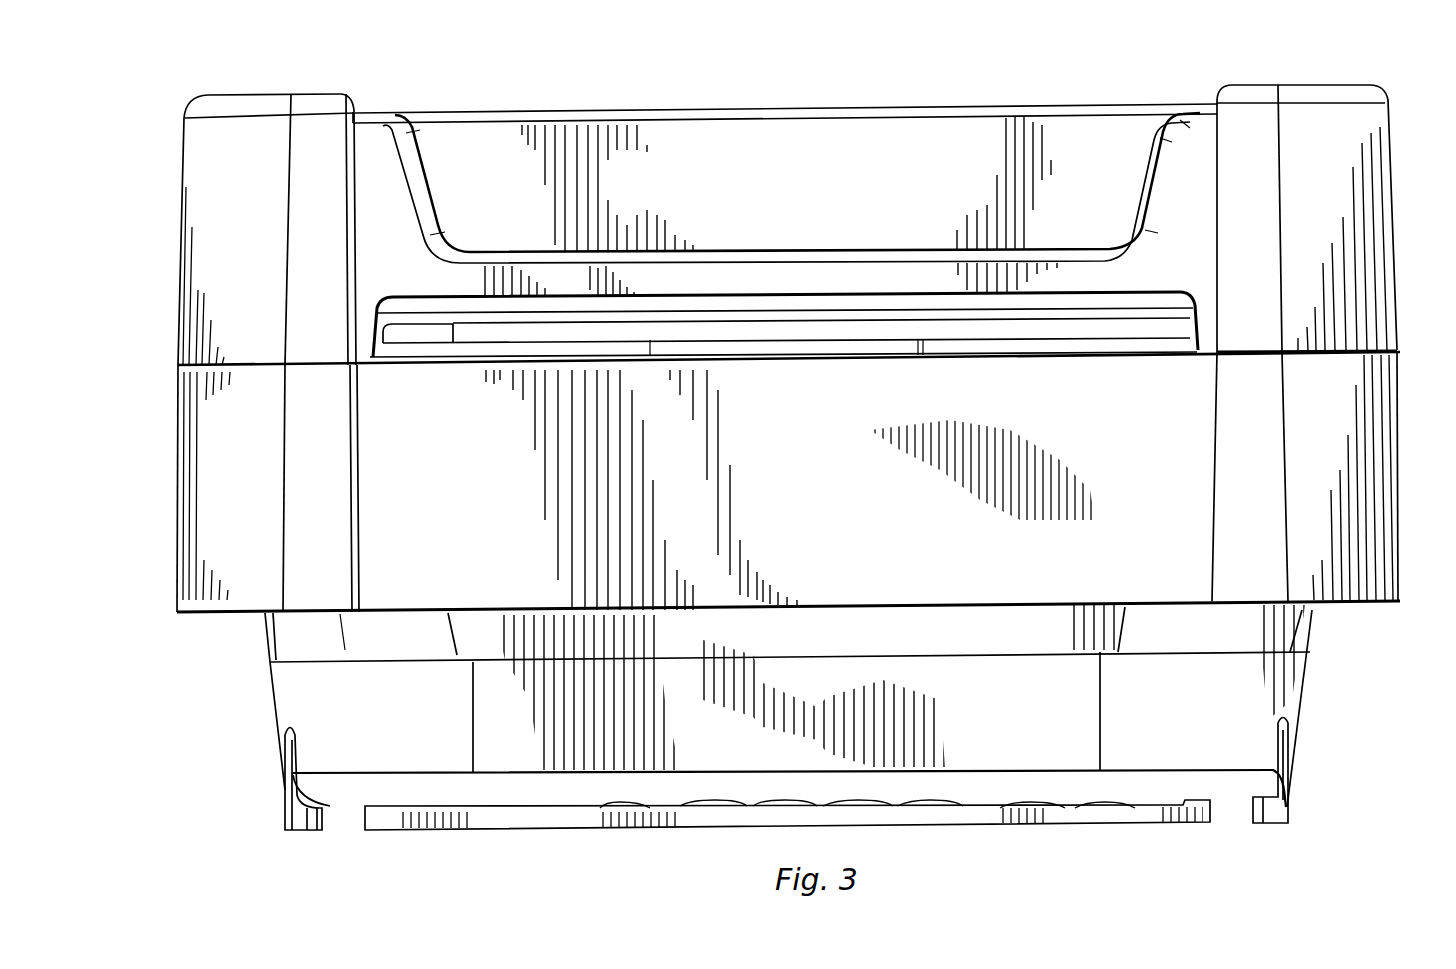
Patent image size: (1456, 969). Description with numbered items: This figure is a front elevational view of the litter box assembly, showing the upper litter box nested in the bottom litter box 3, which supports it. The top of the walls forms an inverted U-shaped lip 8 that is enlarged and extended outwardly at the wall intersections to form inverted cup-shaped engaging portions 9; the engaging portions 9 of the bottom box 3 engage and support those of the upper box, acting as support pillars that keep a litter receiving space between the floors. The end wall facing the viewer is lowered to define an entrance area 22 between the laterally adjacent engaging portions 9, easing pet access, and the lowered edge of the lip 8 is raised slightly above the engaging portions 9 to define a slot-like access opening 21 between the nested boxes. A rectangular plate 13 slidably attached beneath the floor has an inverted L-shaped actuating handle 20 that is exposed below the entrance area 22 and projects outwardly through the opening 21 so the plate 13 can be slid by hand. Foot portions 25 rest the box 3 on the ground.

The second litter box 3 is at (976, 719).
The inverted U-shaped lip 8 is at (390, 284).
The inverted cup-shaped engaging portions 9 is at (207, 187).
The rectangular plate 13 is at (1095, 810).
The actuating handle 20 is at (768, 326).
The slot-like access opening 21 is at (1154, 298).
The entrance area 22 is at (790, 248).
The foot portions 25 is at (295, 808).